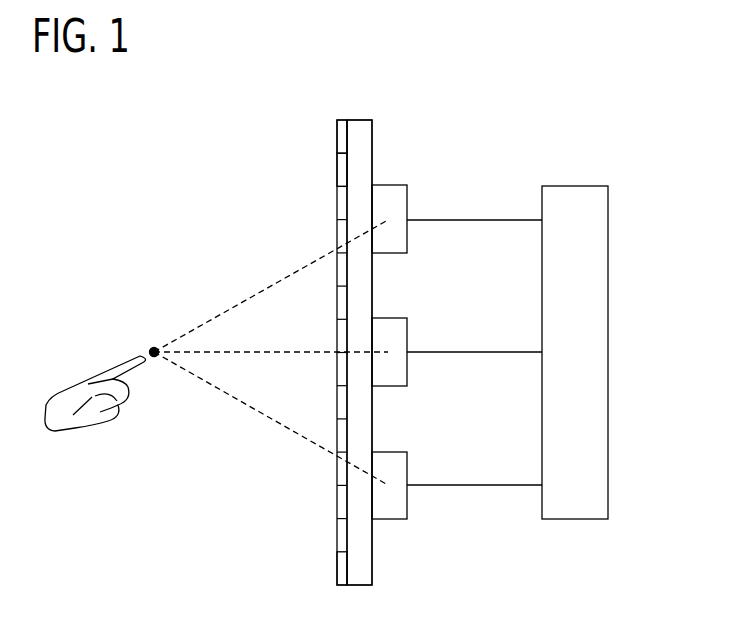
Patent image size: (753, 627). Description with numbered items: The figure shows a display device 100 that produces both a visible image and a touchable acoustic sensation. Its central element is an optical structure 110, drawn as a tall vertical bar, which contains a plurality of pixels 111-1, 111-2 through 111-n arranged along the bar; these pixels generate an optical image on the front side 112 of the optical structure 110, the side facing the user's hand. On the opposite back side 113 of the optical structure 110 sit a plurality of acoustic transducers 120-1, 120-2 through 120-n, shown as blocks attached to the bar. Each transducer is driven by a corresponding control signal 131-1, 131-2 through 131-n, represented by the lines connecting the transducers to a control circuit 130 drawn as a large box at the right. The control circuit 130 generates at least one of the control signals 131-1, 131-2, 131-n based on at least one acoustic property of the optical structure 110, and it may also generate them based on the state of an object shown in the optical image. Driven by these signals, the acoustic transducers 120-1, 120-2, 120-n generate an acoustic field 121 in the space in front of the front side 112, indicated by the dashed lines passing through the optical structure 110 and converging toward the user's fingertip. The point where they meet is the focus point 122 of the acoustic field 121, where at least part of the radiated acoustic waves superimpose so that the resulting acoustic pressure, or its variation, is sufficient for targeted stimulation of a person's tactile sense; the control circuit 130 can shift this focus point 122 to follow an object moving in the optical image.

The display device 100 is at (117, 584).
The optical structure 110 is at (358, 118).
The pixel 111-1 is at (337, 130).
The pixel 111-2 is at (337, 170).
The pixel 111-n is at (337, 568).
The front side 112 is at (322, 207).
The back side 113 is at (386, 141).
The acoustic transducer 120-1 is at (407, 200).
The acoustic transducer 120-2 is at (407, 335).
The acoustic transducer 120-n is at (407, 467).
The acoustic field 121 is at (166, 374).
The focus point 122 is at (150, 348).
The control circuit 130 is at (608, 352).
The control signal 131-1 is at (488, 222).
The control signal 131-2 is at (490, 354).
The control signal 131-n is at (490, 487).